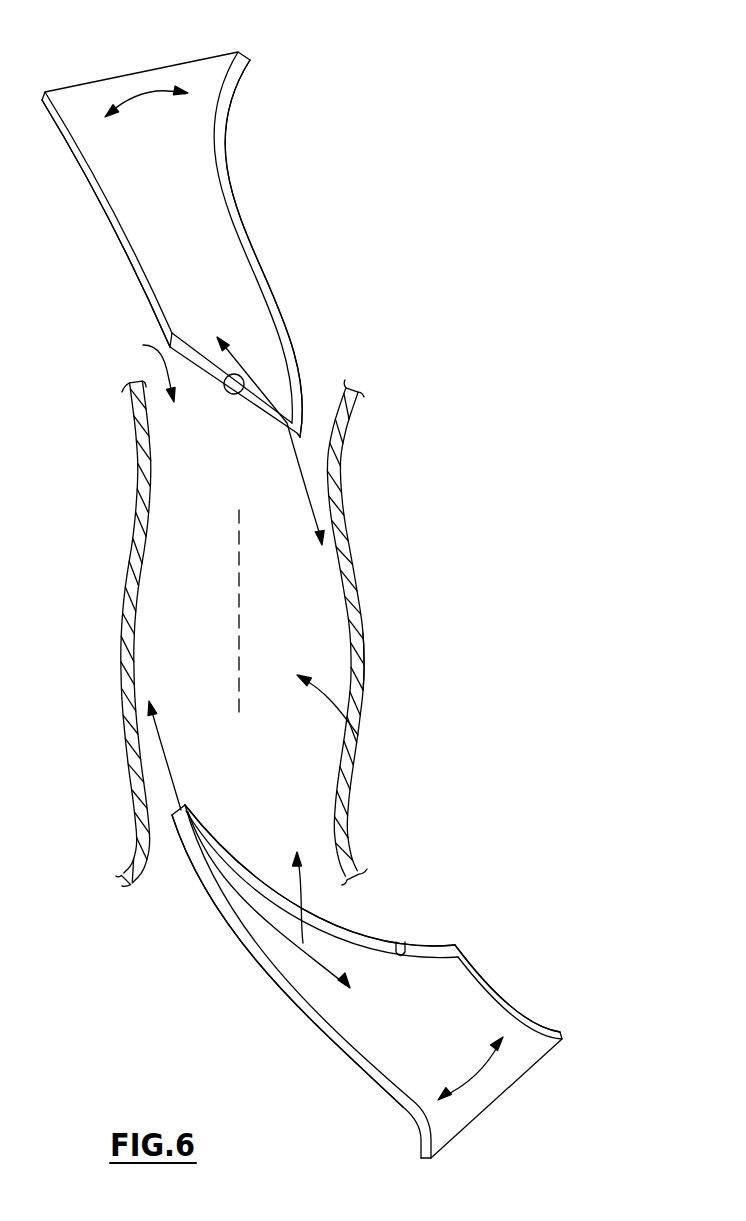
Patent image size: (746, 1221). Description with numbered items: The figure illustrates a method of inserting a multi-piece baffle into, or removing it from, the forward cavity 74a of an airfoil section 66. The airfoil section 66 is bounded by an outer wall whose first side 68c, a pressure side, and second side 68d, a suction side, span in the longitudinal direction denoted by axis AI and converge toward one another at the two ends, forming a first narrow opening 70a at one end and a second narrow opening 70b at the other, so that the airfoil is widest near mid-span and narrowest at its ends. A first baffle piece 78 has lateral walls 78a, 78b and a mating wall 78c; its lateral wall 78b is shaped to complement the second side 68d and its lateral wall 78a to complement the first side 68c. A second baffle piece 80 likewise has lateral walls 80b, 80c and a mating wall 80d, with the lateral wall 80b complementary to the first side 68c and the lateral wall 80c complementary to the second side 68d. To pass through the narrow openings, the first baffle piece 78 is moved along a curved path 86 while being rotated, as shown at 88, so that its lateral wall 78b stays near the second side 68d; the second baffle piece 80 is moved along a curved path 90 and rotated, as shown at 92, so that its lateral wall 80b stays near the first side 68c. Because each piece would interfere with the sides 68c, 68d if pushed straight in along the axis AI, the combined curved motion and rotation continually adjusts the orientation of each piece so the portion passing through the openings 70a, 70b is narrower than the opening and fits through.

The airfoil section 66 is at (358, 793).
The first side 68c is at (365, 667).
The second side 68d is at (120, 717).
The first narrow opening 70a is at (303, 940).
The second narrow opening 70b is at (137, 366).
The forward cavity 74a is at (357, 735).
The first baffle piece 78 is at (478, 1000).
The lateral wall 78a is at (515, 1010).
The lateral wall 78b is at (266, 975).
The mating wall 78c is at (402, 940).
The second baffle piece 80 is at (240, 282).
The lateral wall 80b is at (280, 318).
The lateral wall 80c is at (148, 259).
The mating wall 80d is at (228, 394).
The curved path 86 is at (232, 893).
The rotation 88 is at (488, 1078).
The curved path 90 is at (300, 468).
The rotation 92 is at (138, 92).
The axis AI is at (238, 600).